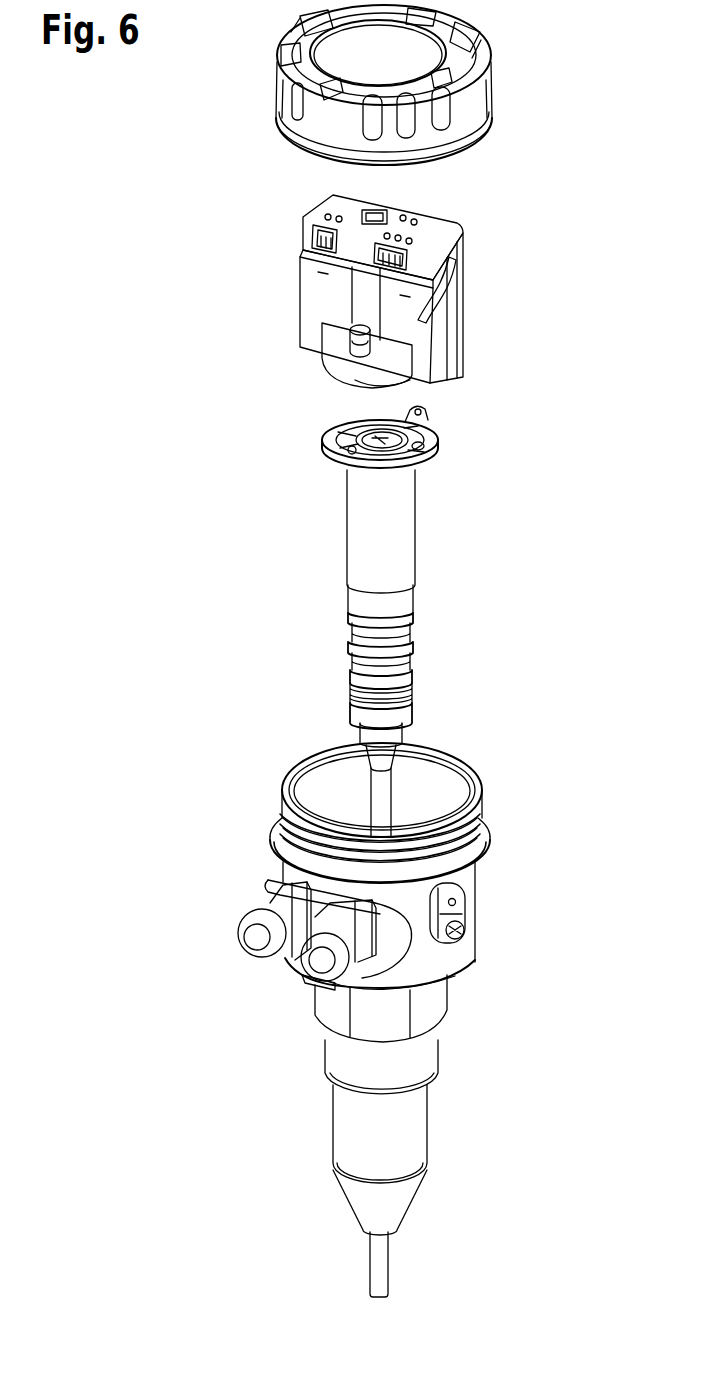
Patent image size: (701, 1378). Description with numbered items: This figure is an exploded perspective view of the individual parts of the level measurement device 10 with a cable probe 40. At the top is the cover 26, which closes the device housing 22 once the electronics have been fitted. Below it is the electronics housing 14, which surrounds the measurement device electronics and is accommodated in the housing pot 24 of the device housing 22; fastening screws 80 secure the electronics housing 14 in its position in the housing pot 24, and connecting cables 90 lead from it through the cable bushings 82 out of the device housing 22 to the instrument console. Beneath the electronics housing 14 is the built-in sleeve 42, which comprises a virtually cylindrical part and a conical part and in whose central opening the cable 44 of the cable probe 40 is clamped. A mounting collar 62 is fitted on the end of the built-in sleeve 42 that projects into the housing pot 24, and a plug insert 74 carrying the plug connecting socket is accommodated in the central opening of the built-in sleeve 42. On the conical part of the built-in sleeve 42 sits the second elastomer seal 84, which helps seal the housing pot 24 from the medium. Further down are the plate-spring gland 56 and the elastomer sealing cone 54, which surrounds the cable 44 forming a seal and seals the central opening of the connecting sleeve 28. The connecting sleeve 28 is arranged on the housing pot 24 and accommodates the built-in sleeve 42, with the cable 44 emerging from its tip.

The measurement device 10 is at (488, 610).
The electronics housing 14 is at (410, 291).
The device housing 22 is at (366, 1013).
The housing pot 24 is at (450, 783).
The cover 26 is at (468, 108).
The connecting sleeve 28 is at (424, 1058).
The cable probe 40 is at (380, 803).
The built-in sleeve 42 is at (378, 620).
The cable 44 is at (380, 1268).
The sealing cone 54 is at (393, 733).
The plate-spring gland 56 is at (360, 722).
The mounting collar 62 is at (373, 451).
The plug insert 74 is at (428, 432).
The fastening screws 80 is at (353, 345).
The cable bushings 82 is at (240, 917).
The second elastomer seal 84 is at (403, 687).
The connecting cables 90 is at (450, 297).